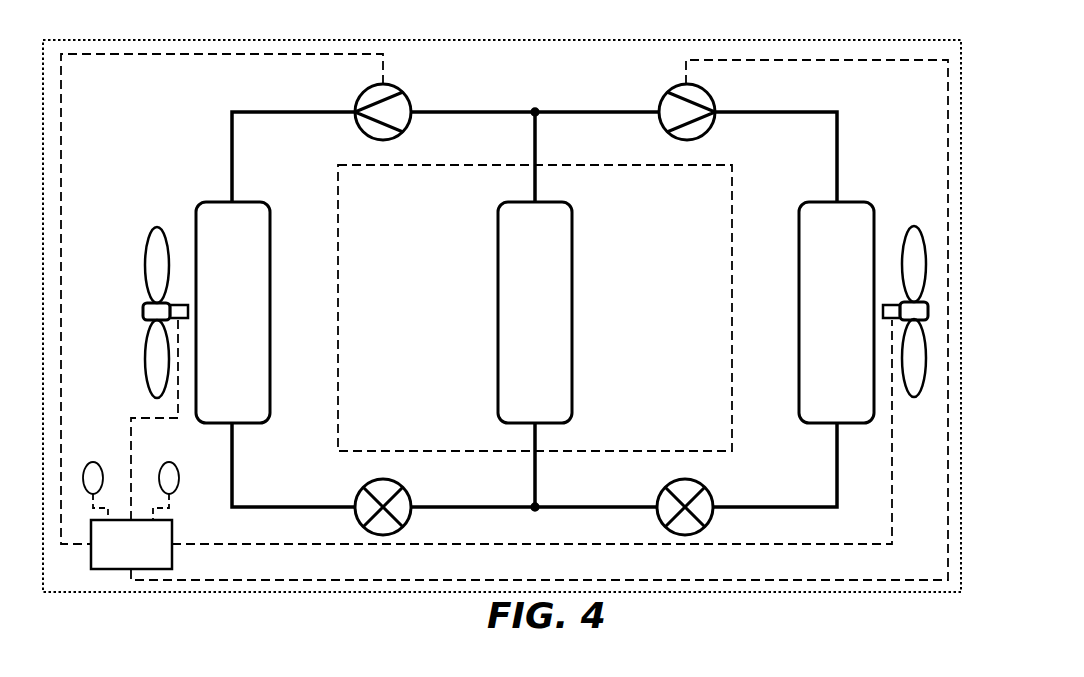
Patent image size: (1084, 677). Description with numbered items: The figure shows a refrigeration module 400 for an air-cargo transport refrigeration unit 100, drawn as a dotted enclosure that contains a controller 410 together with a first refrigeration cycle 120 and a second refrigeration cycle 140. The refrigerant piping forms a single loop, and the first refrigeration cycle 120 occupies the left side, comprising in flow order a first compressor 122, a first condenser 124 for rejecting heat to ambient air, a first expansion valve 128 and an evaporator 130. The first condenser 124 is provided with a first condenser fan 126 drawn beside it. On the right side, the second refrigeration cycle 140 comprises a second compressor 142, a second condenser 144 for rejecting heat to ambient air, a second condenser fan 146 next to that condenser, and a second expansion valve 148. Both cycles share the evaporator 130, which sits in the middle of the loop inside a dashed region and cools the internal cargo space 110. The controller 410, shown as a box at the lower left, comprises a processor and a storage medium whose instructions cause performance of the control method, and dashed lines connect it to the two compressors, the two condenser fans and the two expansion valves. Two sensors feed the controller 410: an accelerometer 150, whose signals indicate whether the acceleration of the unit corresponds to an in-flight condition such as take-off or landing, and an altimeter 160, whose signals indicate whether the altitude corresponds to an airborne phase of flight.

The air-cargo transport refrigeration unit 100 is at (947, 31).
The internal cargo space 110 is at (336, 426).
The first refrigeration cycle 120 is at (435, 93).
The first compressor 122 is at (364, 84).
The first condenser 124 is at (216, 202).
The first condenser fan 126 is at (145, 353).
The first expansion valve 128 is at (403, 480).
The evaporator 130 is at (498, 284).
The second refrigeration cycle 140 is at (633, 93).
The second compressor 142 is at (712, 89).
The second condenser 144 is at (850, 202).
The second condenser fan 146 is at (924, 242).
The second expansion valve 148 is at (716, 478).
The accelerometer 150 is at (87, 463).
The altimeter 160 is at (163, 463).
The refrigeration module 400 is at (878, 592).
The controller 410 is at (131, 544).